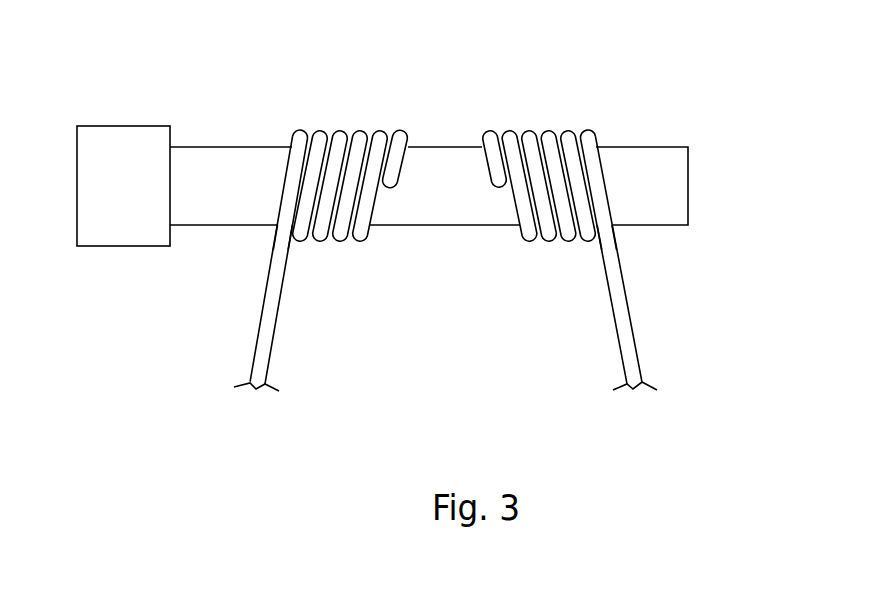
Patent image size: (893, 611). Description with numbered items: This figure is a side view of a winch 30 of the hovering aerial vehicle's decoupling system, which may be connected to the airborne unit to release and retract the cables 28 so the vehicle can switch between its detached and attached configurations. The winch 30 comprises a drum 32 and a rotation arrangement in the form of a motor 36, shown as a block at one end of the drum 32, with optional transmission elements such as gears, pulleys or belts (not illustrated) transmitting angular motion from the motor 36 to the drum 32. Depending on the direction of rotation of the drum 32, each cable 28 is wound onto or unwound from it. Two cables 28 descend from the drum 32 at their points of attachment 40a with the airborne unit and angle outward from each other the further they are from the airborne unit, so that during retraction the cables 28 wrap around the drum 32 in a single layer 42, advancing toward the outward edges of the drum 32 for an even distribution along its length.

The cable 28 is at (268, 337).
The winch 30 is at (460, 164).
The drum 32 is at (675, 200).
The motor 36 is at (107, 125).
The points of attachment 40a is at (278, 228).
The single layer 42 is at (292, 132).